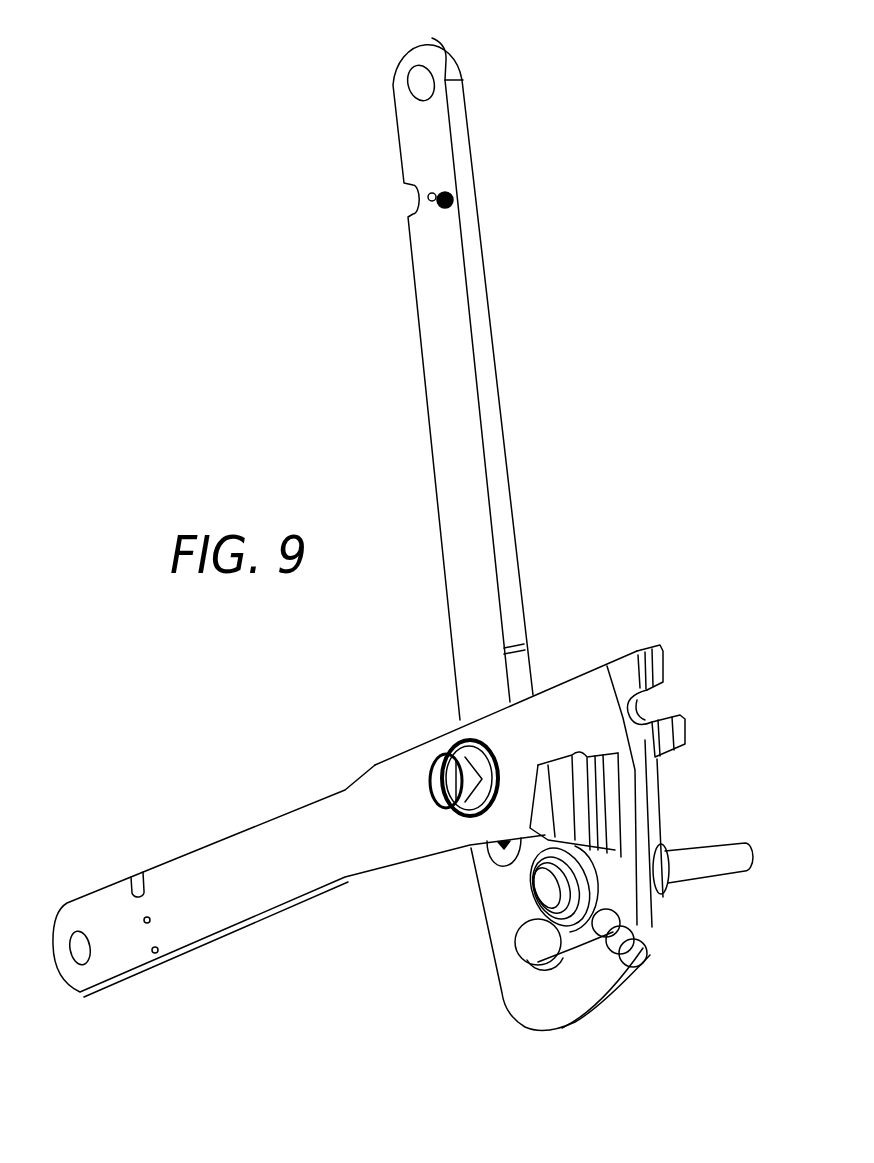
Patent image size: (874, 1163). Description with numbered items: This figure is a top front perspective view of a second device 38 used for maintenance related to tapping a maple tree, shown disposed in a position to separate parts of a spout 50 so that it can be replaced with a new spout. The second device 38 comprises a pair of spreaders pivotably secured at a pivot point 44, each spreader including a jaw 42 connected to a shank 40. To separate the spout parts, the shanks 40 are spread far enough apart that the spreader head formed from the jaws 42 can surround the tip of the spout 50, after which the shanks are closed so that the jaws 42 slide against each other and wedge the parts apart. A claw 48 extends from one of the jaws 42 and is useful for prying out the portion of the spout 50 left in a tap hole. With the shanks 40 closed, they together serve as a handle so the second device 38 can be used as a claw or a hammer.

The second device 38 is at (616, 605).
The shank 40 is at (417, 292).
The jaw 42 is at (520, 965).
The pivot point 44 is at (446, 800).
The claw 48 is at (642, 694).
The spout 50 is at (547, 886).